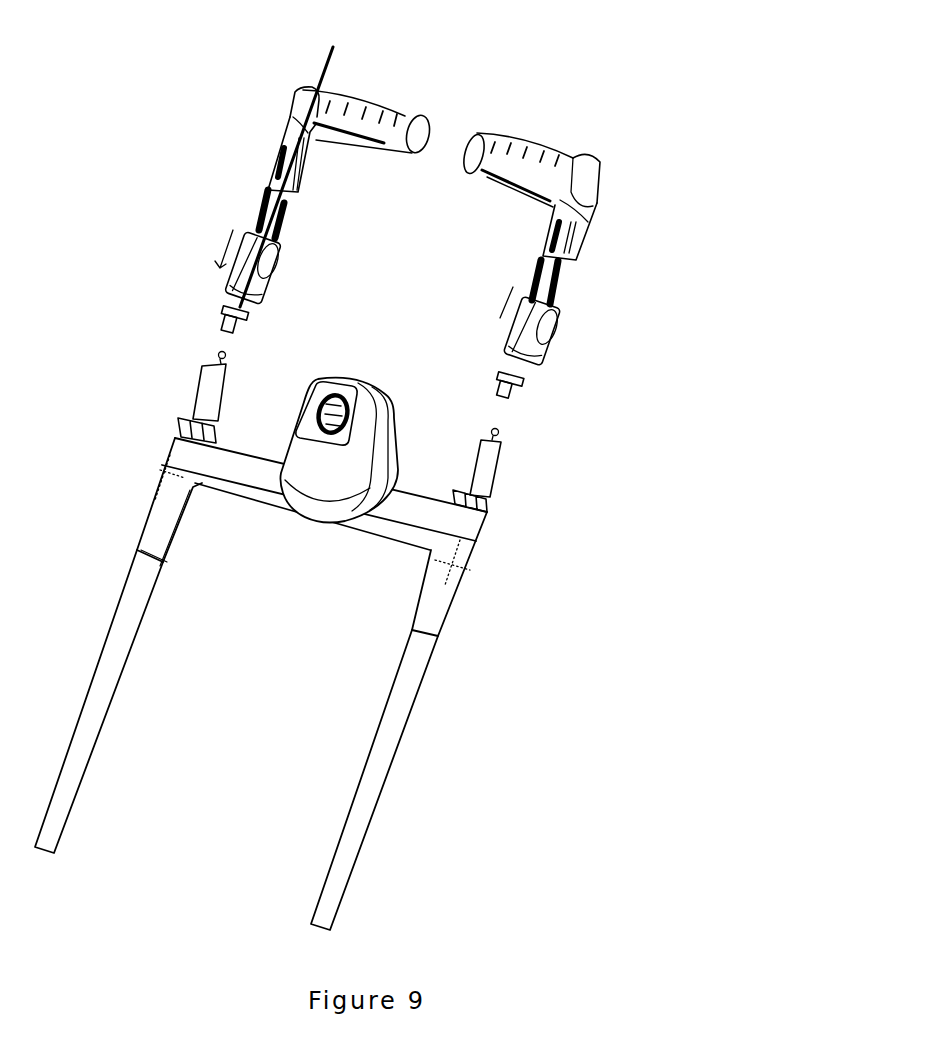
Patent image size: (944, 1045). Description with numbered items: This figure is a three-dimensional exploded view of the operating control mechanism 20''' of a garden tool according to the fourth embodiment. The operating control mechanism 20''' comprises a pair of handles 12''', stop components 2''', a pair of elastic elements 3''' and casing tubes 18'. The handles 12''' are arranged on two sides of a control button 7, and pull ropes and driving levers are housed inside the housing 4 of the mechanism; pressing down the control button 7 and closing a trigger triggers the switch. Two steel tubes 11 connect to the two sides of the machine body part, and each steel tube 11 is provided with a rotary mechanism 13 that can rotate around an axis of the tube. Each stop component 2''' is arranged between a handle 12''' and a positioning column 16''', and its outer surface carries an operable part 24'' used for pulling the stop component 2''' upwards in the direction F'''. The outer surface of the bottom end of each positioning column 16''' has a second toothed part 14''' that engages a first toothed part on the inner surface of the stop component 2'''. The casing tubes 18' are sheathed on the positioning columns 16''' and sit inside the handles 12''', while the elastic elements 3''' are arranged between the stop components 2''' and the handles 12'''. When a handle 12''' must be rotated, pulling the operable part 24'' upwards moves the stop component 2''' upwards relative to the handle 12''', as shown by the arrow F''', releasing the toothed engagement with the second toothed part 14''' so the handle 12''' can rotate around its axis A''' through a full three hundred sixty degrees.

The operating control mechanism 20''' is at (372, 466).
The handle 12''' is at (458, 155).
The axis A''' is at (298, 161).
The elastic element 3''' is at (411, 236).
The stop component 2''' is at (405, 340).
The operable part 24'' is at (428, 344).
The direction of pulling F''' is at (358, 266).
The casing tube 18' is at (334, 339).
The positioning column 16''' is at (364, 422).
The second toothed part 14''' is at (335, 474).
The rotary mechanism 13 is at (162, 522).
The housing 4 is at (407, 513).
The control button 7 is at (327, 467).
The steel tube 11 is at (112, 662).